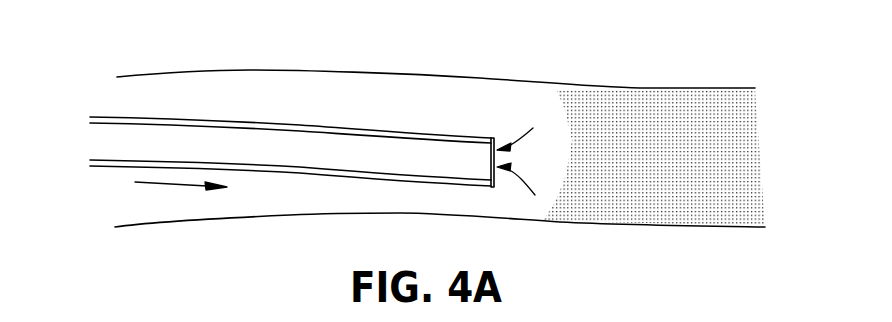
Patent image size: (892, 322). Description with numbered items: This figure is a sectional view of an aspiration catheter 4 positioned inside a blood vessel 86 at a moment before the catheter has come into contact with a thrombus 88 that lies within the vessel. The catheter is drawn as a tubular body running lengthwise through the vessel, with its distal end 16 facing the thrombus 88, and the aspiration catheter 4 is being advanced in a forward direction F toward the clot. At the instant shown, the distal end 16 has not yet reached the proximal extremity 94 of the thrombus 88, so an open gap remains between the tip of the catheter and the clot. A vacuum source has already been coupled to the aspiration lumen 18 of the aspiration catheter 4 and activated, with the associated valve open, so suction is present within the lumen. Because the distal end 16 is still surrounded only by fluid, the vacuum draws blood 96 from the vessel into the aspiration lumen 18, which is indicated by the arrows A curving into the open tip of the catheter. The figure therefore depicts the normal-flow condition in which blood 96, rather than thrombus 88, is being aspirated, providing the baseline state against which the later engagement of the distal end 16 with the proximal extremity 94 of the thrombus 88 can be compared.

The blood vessel 86 is at (177, 70).
The blood 96 is at (302, 200).
The aspiration catheter 4 is at (280, 123).
The aspiration lumen 18 is at (408, 159).
The distal end 16 is at (497, 139).
The arrows A is at (522, 178).
The forward direction F is at (190, 187).
The thrombus 88 is at (695, 115).
The proximal extremity 94 is at (573, 150).